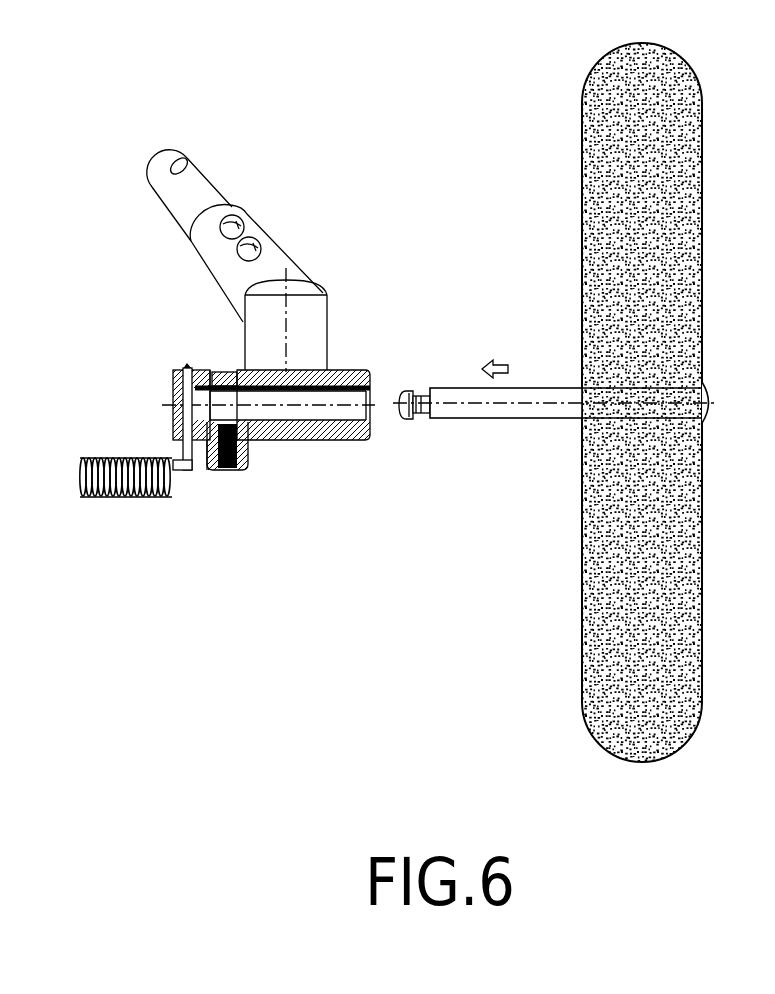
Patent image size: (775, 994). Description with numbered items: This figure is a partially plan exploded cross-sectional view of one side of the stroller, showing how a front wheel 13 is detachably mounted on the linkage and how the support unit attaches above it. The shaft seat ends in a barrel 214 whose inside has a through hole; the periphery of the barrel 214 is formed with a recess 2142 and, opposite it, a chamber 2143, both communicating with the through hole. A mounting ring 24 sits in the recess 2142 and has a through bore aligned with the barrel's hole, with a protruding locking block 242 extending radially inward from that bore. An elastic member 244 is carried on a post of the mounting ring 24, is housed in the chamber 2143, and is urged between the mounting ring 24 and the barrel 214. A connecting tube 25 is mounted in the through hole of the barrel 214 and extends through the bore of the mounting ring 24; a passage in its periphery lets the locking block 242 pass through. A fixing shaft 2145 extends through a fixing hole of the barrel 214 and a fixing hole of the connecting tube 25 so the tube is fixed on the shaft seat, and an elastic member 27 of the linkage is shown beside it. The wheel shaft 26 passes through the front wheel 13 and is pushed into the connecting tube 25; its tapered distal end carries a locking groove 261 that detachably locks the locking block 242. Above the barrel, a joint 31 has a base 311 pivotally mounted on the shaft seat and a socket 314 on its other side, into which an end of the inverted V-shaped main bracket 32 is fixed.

The front wheel 13 is at (673, 593).
The wheel shaft 26 is at (493, 407).
The locking groove 261 is at (424, 392).
The main bracket 32 is at (195, 188).
The joint 31 is at (307, 240).
The socket 314 is at (208, 258).
The base 311 is at (313, 308).
The barrel 214 is at (350, 440).
The connecting tube 25 is at (273, 440).
The mounting ring 24 is at (228, 370).
The recess 2142 is at (220, 368).
The locking block 242 is at (173, 378).
The fixing shaft 2145 is at (181, 412).
The elastic member 244 is at (230, 471).
The chamber 2143 is at (215, 472).
The elastic member 27 is at (82, 463).